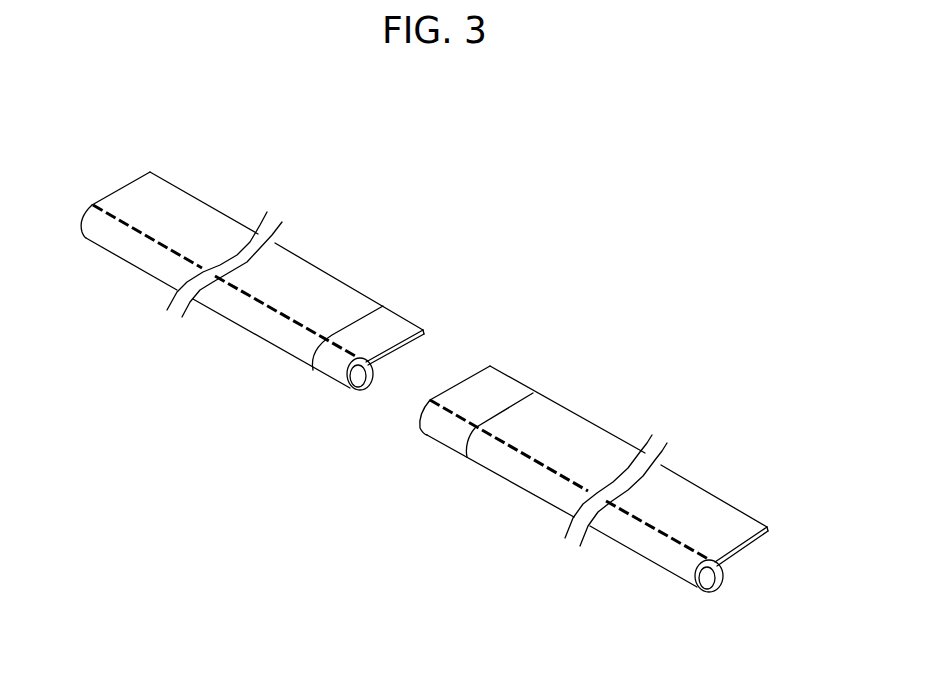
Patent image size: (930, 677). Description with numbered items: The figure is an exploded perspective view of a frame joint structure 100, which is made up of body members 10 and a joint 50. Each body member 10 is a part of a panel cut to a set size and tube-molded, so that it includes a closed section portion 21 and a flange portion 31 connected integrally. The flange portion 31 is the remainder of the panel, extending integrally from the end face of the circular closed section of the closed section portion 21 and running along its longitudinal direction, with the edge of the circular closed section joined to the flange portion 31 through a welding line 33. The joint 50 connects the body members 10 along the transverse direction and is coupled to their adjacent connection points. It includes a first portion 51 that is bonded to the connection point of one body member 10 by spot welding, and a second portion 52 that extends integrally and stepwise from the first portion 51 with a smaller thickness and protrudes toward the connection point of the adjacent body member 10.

The frame joint structure 100 is at (580, 204).
The body member 10 is at (372, 367).
The closed section portion 21 is at (285, 343).
The flange portion 31 is at (458, 349).
The welding line 33 is at (250, 300).
The joint 50 is at (490, 475).
The first portion 51 is at (385, 315).
The second portion 52 is at (423, 337).